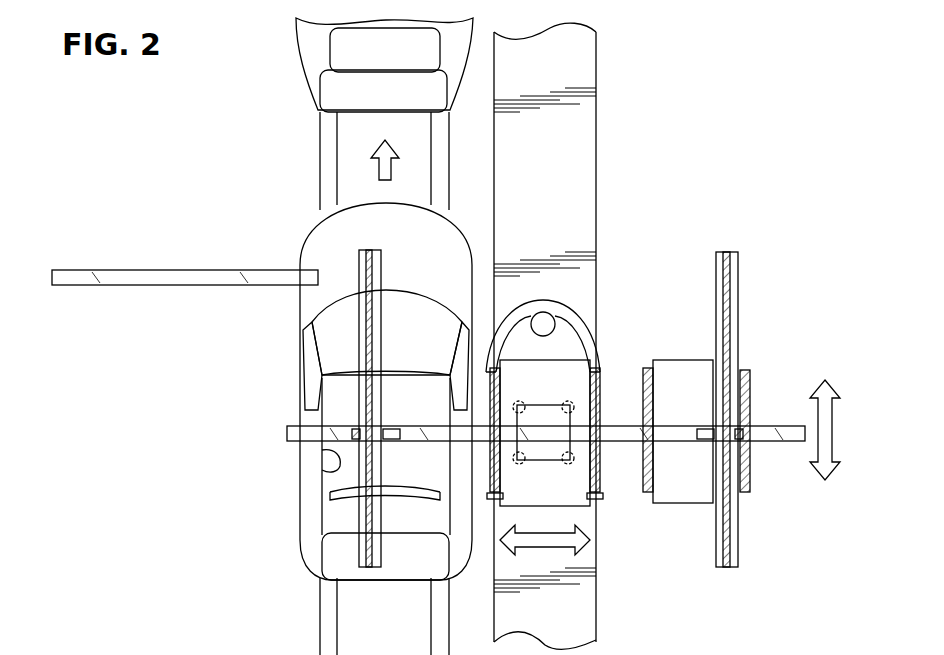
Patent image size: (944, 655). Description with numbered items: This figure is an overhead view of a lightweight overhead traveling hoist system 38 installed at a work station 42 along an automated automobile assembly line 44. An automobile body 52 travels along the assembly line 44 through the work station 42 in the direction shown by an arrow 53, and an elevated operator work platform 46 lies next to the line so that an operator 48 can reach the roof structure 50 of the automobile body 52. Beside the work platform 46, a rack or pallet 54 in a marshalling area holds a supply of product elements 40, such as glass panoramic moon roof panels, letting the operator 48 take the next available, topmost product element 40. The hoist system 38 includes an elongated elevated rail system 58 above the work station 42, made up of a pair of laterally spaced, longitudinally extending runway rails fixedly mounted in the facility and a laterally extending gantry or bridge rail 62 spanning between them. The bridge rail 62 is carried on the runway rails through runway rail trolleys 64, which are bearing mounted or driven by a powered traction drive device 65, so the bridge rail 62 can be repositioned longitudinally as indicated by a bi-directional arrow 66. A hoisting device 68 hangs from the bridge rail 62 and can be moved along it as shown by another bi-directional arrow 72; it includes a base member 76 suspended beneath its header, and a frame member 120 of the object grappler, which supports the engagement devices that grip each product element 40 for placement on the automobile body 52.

The lightweight overhead traveling hoist system 38 is at (188, 212).
The product element 40 is at (638, 416).
The work station 42 is at (262, 411).
The automated manufacturing assembly line 44 is at (320, 597).
The elevated operator work platform 46 is at (575, 152).
The operator 48 is at (558, 310).
The roof structure 50 is at (340, 470).
The automobile body 52 is at (318, 538).
The arrow 53 is at (370, 168).
The rack or pallet 54 is at (703, 507).
The elongated elevated rail system 58 is at (260, 442).
The gantry or bridge rail 62 is at (774, 446).
The runway rail trolley 64 is at (354, 432).
The runway trolley powered traction drive device 65 is at (390, 442).
The bi-directional arrow 66 is at (822, 488).
The hoisting device 68 is at (550, 462).
The bi-directional arrow 72 is at (580, 546).
The base member 76 is at (569, 464).
The frame member 120 is at (592, 480).